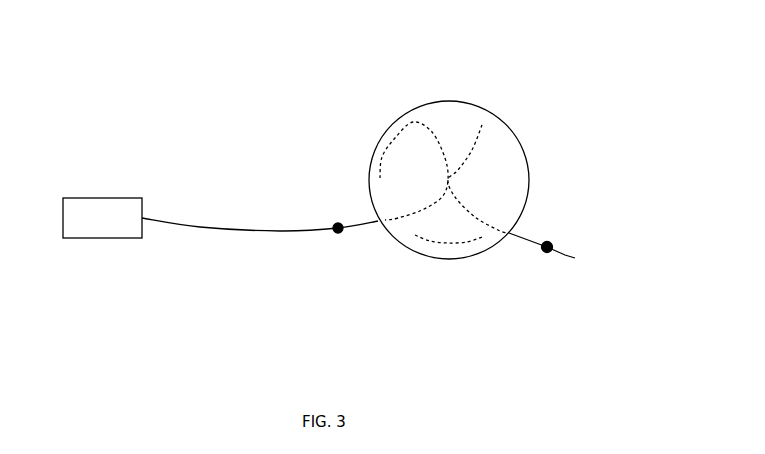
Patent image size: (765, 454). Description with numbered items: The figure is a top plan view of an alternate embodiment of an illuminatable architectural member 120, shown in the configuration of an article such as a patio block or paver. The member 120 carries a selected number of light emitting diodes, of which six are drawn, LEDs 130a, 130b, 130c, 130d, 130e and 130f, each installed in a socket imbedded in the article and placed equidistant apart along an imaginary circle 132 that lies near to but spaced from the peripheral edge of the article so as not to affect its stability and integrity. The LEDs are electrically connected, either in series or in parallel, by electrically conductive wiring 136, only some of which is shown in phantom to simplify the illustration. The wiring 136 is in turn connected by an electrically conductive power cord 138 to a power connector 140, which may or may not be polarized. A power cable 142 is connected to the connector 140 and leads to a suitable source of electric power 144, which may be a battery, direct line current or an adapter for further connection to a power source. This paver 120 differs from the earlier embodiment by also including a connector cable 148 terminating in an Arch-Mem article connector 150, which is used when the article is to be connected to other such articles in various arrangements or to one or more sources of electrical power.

The member 120 is at (449, 164).
The LED 130a is at (512, 111).
The LED 130b is at (550, 166).
The LED 130c is at (514, 256).
The LED 130d is at (389, 276).
The LED 130e is at (331, 185).
The LED 130f is at (383, 105).
The imaginary circle 132 is at (397, 208).
The electrically conductive wiring 136 is at (501, 173).
The power cord 138 is at (365, 250).
The power connector 140 is at (305, 252).
The power cable 142 is at (260, 252).
The source of electric power 144 is at (102, 193).
The connector cable 148 is at (542, 235).
The Arch-Mem article connector 150 is at (579, 256).